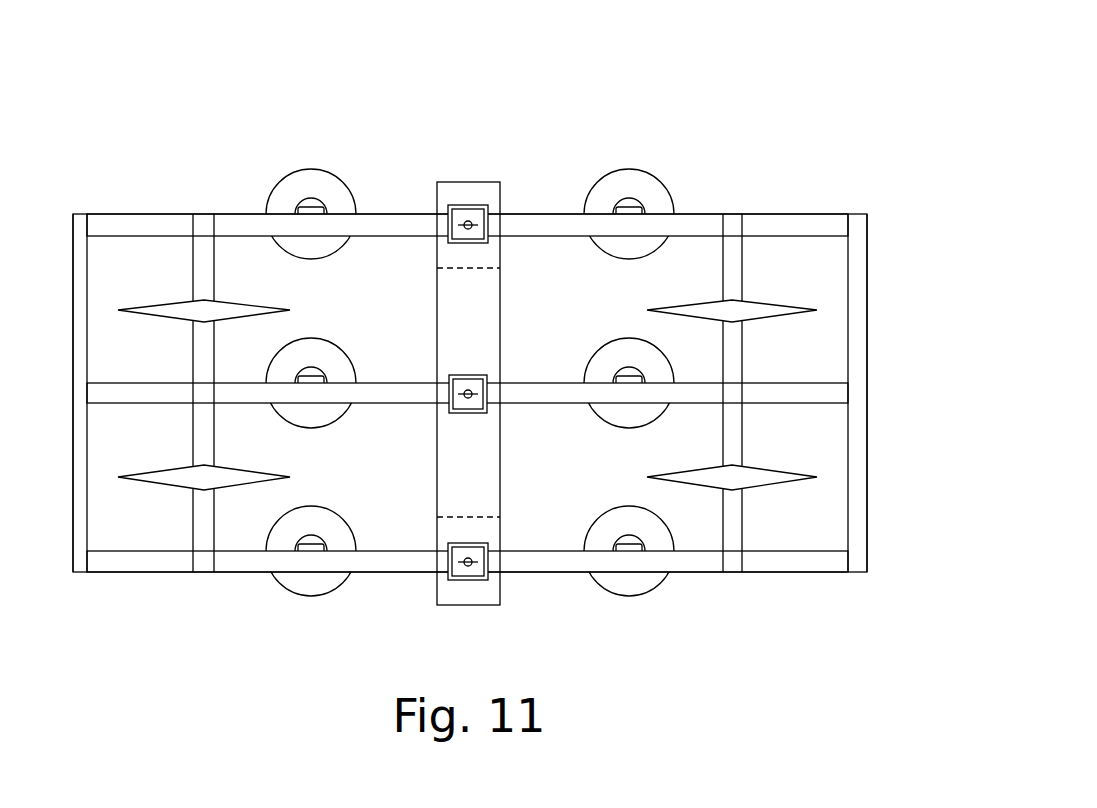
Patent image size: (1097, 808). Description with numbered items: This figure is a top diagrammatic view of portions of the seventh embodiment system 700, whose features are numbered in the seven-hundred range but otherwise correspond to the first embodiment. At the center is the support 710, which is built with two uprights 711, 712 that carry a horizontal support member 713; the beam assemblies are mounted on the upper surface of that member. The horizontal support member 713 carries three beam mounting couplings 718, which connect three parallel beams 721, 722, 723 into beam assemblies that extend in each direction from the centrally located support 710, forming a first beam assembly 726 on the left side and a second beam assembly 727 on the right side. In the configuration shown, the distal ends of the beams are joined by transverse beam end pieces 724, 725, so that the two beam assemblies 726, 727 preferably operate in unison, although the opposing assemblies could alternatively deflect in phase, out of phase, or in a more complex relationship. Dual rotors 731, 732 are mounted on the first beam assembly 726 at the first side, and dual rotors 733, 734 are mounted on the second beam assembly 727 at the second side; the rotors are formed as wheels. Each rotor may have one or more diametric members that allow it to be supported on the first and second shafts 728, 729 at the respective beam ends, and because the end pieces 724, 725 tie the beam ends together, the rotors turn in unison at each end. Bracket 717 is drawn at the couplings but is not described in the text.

The seventh embodiment system 700 is at (722, 65).
The support 710 is at (457, 176).
The upright 711 is at (502, 530).
The upright 712 is at (503, 195).
The horizontal support member 713 is at (437, 327).
The bracket 717 is at (445, 236).
The beam mounting coupling 718 is at (490, 237).
The beam 721 is at (155, 573).
The beam 722 is at (128, 405).
The beam 723 is at (153, 212).
The transverse beam end piece 724 is at (73, 255).
The transverse beam end piece 725 is at (867, 518).
The first beam assembly 726 is at (87, 212).
The second beam assembly 727 is at (847, 212).
The first shaft 728 is at (195, 265).
The second shaft 729 is at (722, 274).
The rotor 731 is at (230, 467).
The rotor 732 is at (227, 301).
The rotor 733 is at (758, 467).
The rotor 734 is at (758, 300).